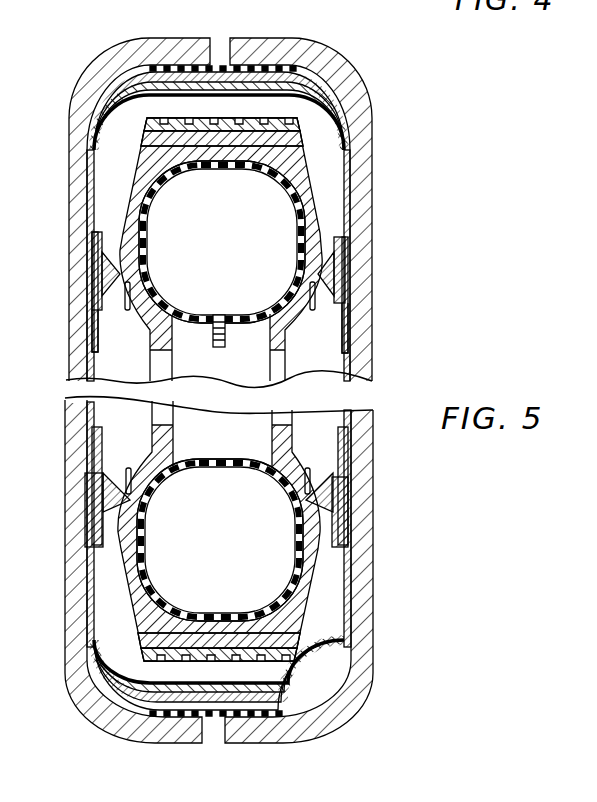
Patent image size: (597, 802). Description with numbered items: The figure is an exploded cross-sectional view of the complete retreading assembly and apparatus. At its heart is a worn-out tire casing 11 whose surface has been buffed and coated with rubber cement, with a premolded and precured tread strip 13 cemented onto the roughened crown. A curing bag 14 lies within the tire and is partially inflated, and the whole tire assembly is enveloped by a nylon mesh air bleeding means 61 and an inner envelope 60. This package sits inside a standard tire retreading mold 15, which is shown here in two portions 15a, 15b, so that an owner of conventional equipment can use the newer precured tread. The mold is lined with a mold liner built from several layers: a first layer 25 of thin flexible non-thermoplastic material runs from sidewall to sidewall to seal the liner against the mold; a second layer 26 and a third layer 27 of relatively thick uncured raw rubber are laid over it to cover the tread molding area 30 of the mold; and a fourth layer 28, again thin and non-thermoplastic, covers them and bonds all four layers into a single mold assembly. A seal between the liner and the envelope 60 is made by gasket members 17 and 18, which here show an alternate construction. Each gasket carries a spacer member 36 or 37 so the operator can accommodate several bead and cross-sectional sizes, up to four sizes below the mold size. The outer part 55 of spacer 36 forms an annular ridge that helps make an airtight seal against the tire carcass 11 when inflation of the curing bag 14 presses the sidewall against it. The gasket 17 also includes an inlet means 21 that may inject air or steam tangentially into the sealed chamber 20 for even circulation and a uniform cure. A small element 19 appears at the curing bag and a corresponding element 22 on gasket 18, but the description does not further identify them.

The tire casing 11 is at (117, 257).
The tread strip 13 is at (197, 127).
The curing bag 14 is at (232, 248).
The standard tire retreading mold 15 is at (248, 190).
The housing left half 15a is at (178, 47).
The housing right half 15b is at (277, 43).
The gasket member 17 is at (97, 322).
The gasket member 18 is at (344, 290).
The screw 19 is at (225, 334).
The chamber 20 is at (110, 168).
The inlet means 21 is at (93, 333).
The right lower strip 22 is at (346, 343).
The first layer 25 is at (340, 106).
The second layer 26 is at (342, 85).
The third layer 27 is at (347, 77).
The fourth layer 28 is at (331, 68).
The tread molding area 30 is at (211, 63).
The spacer member 36 is at (102, 290).
The spacer member 37 is at (342, 268).
The outer part of spacer 55 is at (115, 278).
The inner envelope 60 is at (166, 237).
The nylon mesh air bleeding means 61 is at (166, 237).